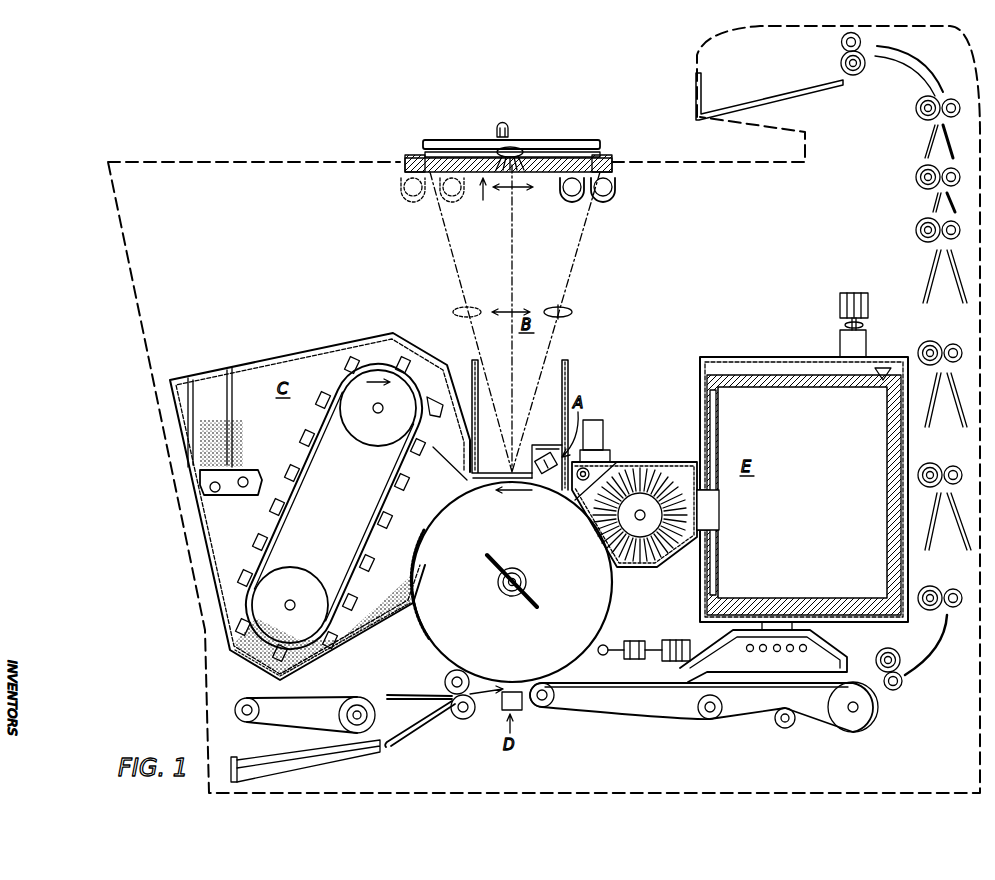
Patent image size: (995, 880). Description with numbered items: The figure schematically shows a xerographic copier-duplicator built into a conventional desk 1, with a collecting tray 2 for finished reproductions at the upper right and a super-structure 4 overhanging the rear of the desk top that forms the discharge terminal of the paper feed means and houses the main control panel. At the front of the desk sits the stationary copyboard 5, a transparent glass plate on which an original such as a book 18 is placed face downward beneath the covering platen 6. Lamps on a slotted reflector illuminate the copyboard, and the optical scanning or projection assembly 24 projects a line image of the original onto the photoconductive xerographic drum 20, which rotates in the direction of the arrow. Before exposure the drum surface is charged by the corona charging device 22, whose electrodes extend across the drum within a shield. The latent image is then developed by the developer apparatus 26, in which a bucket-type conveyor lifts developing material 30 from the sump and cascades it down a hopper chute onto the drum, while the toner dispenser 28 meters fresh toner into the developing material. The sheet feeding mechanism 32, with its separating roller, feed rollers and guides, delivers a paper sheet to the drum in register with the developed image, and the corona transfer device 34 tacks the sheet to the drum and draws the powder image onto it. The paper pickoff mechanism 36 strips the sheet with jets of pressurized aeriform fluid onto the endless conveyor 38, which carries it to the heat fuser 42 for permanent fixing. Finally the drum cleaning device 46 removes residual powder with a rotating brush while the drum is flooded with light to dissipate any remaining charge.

The desk 1 is at (169, 162).
The collecting tray 2 is at (795, 93).
The super-structure 4 is at (707, 45).
The copyboard 5 is at (481, 198).
The platen 6 is at (464, 134).
The book 18 is at (600, 154).
The xerographic drum 20 is at (519, 520).
The corona charging device 22 is at (553, 455).
The optical scanning or projection assembly 24 is at (552, 360).
The developer apparatus 26 is at (271, 342).
The toner dispenser 28 is at (256, 434).
The developing material 30 is at (250, 671).
The sheet feeding mechanism 32 is at (403, 739).
The corona transfer device 34 is at (528, 710).
The paper pickoff mechanism 36 is at (630, 664).
The endless conveyor 38 is at (612, 724).
The heat fuser 42 is at (839, 643).
The drum cleaning device 46 is at (655, 453).